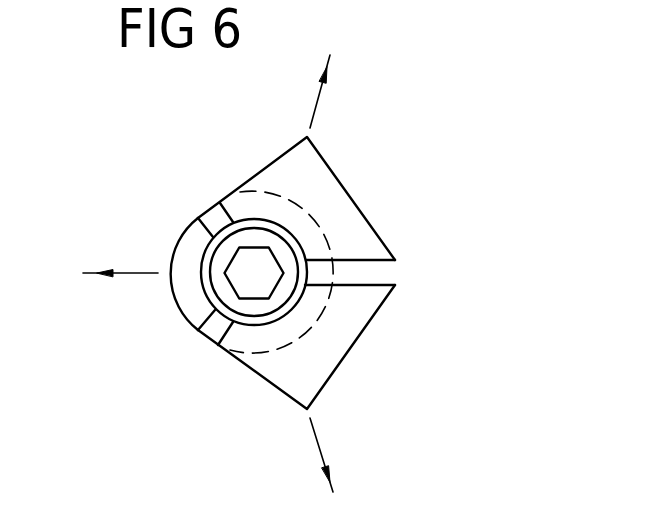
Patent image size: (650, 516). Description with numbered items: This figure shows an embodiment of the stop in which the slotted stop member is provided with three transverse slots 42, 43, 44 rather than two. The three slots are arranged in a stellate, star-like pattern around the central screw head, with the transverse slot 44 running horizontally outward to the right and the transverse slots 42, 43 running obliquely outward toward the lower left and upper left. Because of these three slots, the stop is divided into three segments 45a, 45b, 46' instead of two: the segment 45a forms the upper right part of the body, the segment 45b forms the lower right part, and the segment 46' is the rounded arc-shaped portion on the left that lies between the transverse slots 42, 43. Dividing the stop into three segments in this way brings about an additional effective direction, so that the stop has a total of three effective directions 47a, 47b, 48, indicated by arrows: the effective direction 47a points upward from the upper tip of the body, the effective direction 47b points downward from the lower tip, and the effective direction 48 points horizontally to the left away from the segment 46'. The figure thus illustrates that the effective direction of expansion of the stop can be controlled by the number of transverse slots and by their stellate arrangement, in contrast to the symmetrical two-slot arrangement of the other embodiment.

The transverse slot 42 is at (213, 327).
The transverse slot 43 is at (213, 220).
The transverse slot 44 is at (378, 273).
The segment 45a is at (350, 218).
The segment 45b is at (350, 345).
The segment 46' is at (139, 277).
The effective direction 47a is at (322, 104).
The effective direction 47b is at (318, 444).
The effective direction 48 is at (130, 272).